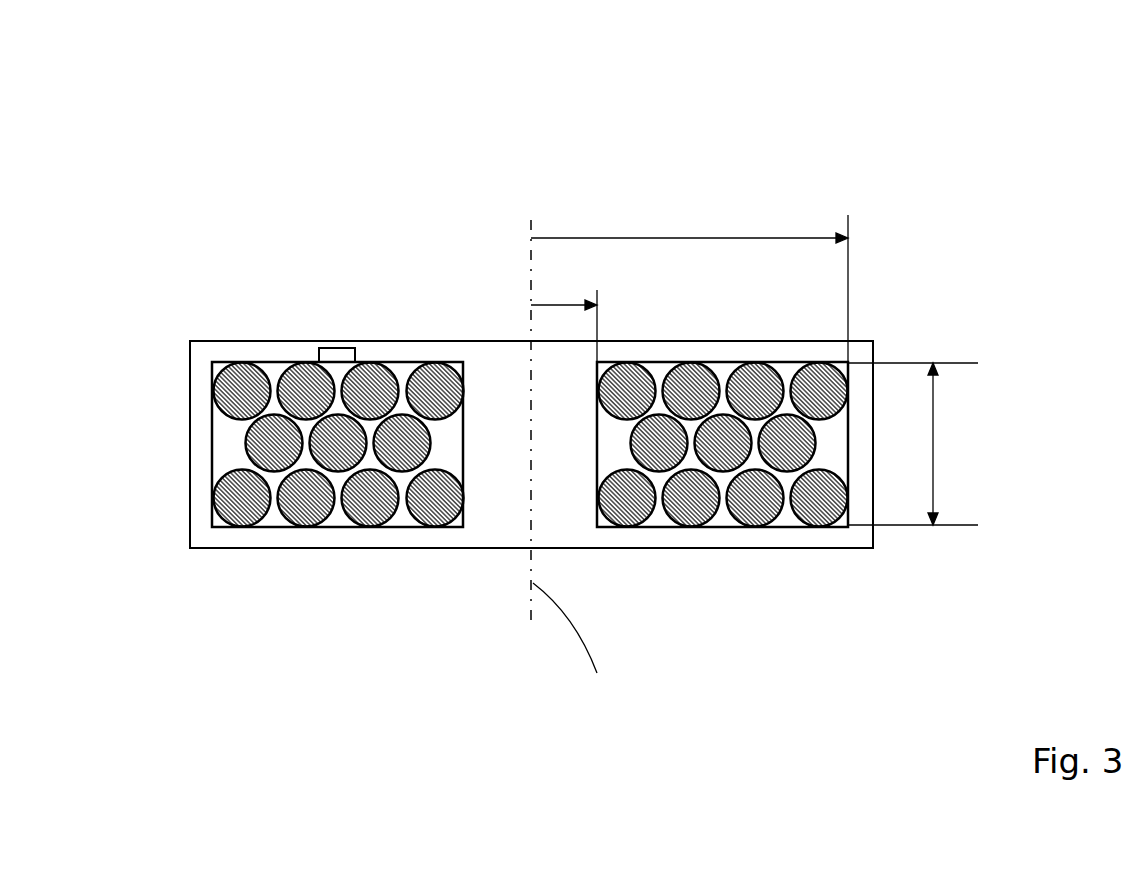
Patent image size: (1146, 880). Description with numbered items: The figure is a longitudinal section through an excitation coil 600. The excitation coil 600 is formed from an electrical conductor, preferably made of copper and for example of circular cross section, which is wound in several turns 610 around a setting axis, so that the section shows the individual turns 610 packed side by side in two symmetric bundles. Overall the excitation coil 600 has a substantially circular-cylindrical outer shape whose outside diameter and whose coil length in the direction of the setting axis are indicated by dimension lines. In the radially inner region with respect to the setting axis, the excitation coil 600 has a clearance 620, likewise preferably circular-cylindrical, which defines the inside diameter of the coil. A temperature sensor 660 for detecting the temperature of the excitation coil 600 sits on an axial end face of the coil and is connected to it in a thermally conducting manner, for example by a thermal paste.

The excitation coil 600 is at (146, 111).
The turns 610 is at (403, 453).
The clearance 620 is at (507, 442).
The temperature sensor 660 is at (337, 358).